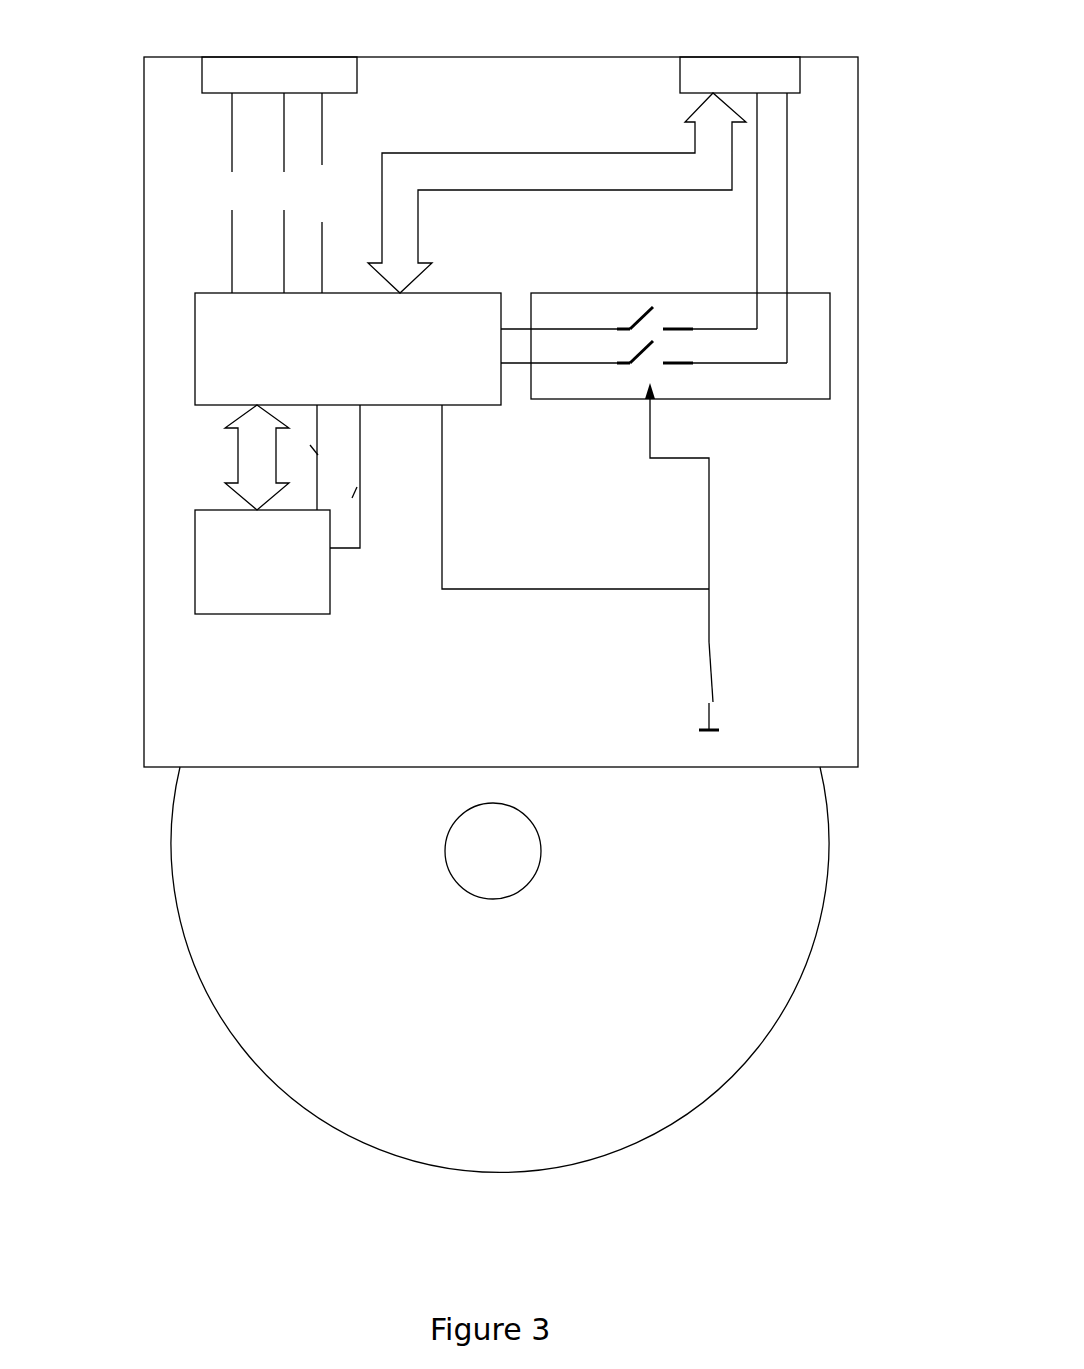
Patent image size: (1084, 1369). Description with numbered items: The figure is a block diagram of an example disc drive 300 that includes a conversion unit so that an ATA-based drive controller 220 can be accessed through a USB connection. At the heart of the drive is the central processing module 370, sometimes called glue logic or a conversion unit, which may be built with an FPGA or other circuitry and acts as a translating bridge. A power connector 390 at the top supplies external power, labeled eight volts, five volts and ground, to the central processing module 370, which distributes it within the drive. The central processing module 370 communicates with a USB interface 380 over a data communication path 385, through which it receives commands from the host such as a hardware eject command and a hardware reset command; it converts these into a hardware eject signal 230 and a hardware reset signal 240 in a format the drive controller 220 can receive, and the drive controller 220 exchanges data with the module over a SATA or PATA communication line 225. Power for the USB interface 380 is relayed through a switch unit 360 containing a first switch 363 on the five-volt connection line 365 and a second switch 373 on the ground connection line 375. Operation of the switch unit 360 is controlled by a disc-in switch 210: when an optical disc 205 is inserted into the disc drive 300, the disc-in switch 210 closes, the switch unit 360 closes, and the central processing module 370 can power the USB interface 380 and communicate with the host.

The disc drive 300 is at (887, 495).
The power connector 390 is at (287, 55).
The USB interface 380 is at (720, 62).
The data communication path 385 is at (545, 147).
The GND connection line 375 is at (753, 255).
The 5V connection line 365 is at (788, 240).
The central processing module 370 is at (207, 337).
The switch unit 360 is at (823, 352).
The second switch 373 is at (632, 320).
The first switch 363 is at (632, 355).
The communication line 225 is at (233, 450).
The drive controller 220 is at (257, 608).
The hardware eject signal 230 is at (413, 425).
The hardware reset signal 240 is at (405, 507).
The disc-in switch 210 is at (720, 648).
The optical disc 205 is at (213, 995).